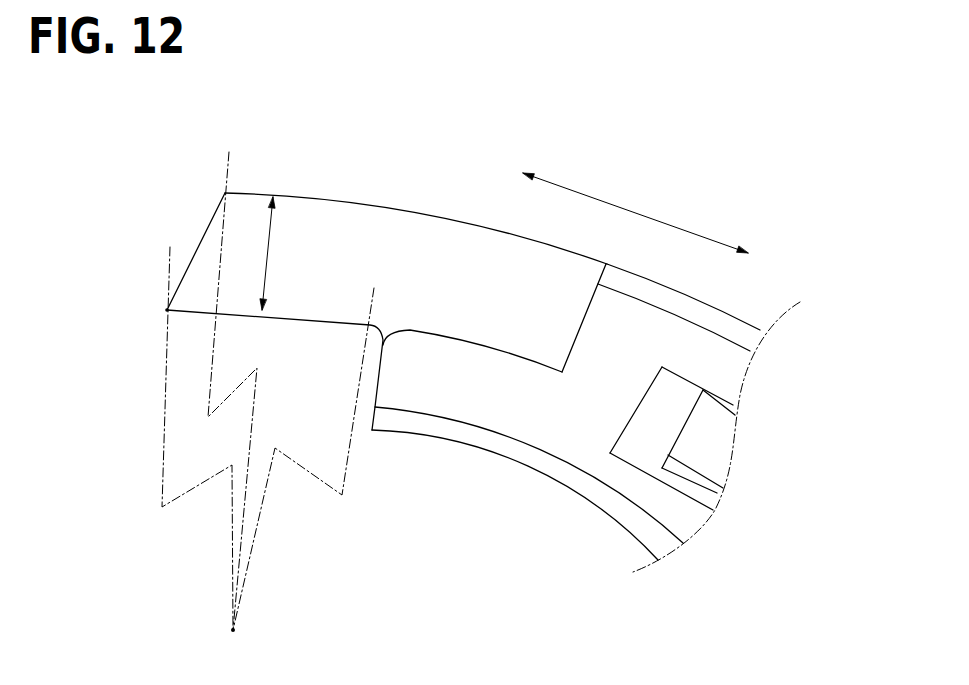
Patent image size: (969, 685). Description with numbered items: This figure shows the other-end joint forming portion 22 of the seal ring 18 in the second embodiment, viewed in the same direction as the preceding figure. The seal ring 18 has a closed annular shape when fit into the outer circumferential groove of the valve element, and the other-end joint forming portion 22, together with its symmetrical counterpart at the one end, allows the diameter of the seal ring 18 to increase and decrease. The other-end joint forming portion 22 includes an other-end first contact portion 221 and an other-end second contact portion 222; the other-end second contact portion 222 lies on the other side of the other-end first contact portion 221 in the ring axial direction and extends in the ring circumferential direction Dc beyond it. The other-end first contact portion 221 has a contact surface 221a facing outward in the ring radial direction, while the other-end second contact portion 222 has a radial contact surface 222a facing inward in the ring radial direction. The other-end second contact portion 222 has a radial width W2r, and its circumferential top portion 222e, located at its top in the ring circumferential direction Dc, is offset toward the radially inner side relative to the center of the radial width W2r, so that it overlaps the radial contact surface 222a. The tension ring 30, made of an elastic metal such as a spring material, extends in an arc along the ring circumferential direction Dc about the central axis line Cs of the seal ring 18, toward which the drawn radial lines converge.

The sheet member 22 is at (376, 197).
The second layer 222 is at (317, 233).
The edge of second layer 222e is at (165, 309).
The end face of second layer 222a is at (275, 315).
The first layer 221 is at (442, 400).
The surface of first layer 221a is at (460, 340).
The cylindrical member 18 is at (712, 298).
The block 30 is at (715, 446).
The width W2r is at (267, 261).
The circumferential direction Dc is at (647, 210).
The center Cs is at (232, 630).